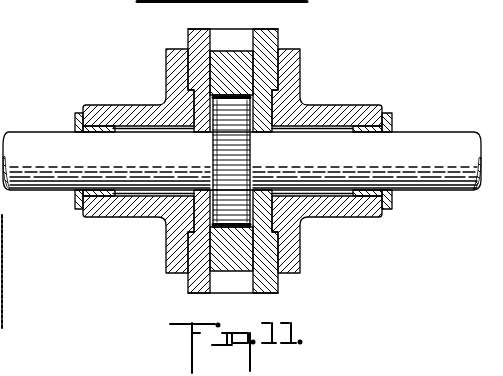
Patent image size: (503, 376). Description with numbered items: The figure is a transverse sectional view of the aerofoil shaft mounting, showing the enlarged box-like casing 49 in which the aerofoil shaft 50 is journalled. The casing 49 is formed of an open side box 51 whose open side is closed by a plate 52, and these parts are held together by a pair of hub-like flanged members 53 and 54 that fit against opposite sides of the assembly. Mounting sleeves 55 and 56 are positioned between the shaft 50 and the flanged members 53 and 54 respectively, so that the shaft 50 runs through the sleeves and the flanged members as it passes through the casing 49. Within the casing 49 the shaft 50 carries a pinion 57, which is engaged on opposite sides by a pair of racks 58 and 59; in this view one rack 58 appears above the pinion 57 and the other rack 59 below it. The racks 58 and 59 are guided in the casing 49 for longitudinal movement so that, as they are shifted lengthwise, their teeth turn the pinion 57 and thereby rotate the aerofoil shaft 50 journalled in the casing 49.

The box-like casing 49 is at (248, 28).
The aerofoil shaft 50 is at (415, 138).
The open side box 51 is at (203, 296).
The plate 52 is at (268, 292).
The hub-like flanged member 53 is at (178, 68).
The hub-like flanged member 54 is at (293, 77).
The mounting sleeve 55 is at (104, 212).
The mounting sleeve 56 is at (353, 213).
The pinion 57 is at (228, 162).
The rack 58 is at (225, 60).
The rack 59 is at (232, 257).